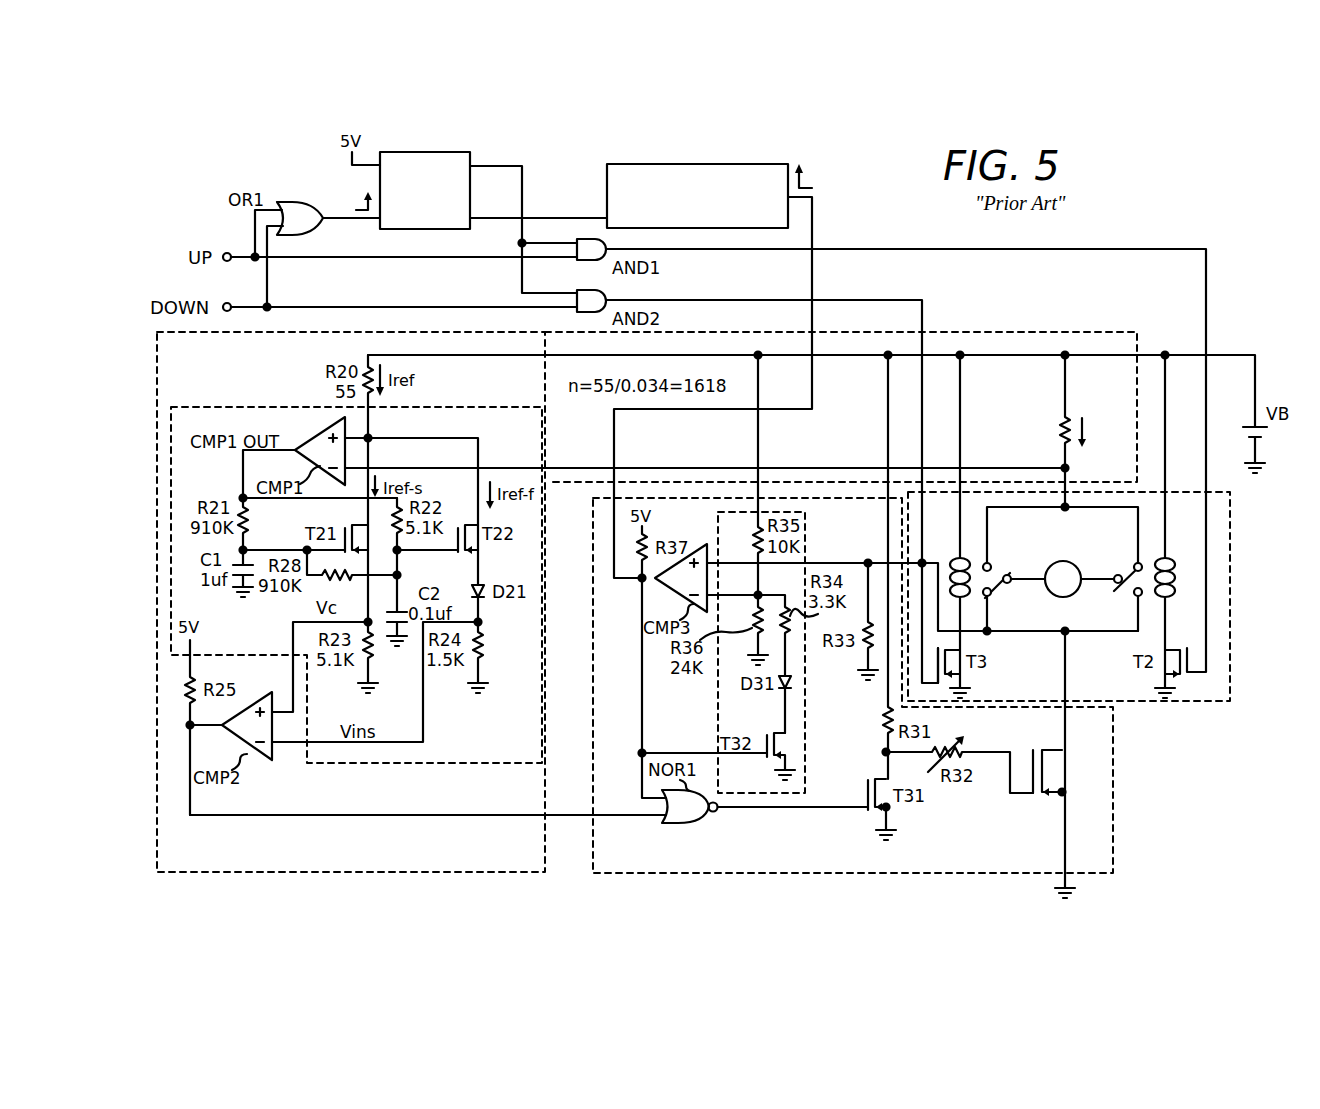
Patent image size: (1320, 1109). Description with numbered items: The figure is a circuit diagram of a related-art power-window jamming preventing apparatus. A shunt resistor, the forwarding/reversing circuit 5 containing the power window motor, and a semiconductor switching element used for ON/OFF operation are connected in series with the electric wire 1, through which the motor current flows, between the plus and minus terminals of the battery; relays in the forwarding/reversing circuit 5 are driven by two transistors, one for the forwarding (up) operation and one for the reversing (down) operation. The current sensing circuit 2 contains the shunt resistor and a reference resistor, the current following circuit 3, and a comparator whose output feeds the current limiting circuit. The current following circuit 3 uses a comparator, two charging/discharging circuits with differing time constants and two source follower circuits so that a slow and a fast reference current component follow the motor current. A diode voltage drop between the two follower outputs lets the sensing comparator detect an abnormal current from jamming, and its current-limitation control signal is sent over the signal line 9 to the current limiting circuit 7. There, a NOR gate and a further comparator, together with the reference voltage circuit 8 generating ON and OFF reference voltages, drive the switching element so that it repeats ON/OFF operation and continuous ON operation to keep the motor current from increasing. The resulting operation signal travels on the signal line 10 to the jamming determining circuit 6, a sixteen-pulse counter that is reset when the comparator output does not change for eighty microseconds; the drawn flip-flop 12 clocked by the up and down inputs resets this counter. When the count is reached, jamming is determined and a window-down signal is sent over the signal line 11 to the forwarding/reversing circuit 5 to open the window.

The electric wire 1 is at (1240, 357).
The current sensing circuit 2 is at (207, 873).
The current following circuit 3 is at (215, 406).
The forwarding/reversing circuit 5 is at (1185, 702).
The jamming determining circuit 6 is at (770, 164).
The current limiting circuit 7 is at (625, 874).
The reference voltage circuit 8 is at (805, 755).
The signal line 9 is at (573, 814).
The signal line 10 is at (815, 230).
The signal line 11 is at (924, 342).
The D flip-flop 12 is at (470, 158).